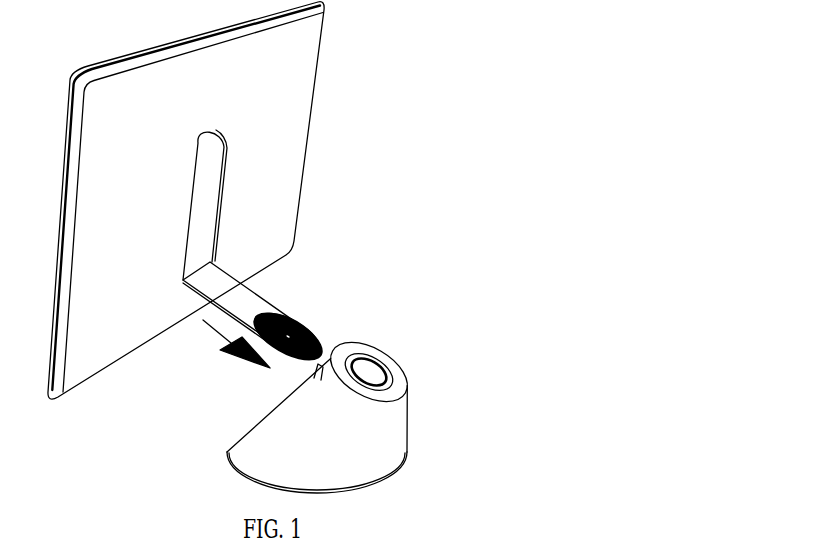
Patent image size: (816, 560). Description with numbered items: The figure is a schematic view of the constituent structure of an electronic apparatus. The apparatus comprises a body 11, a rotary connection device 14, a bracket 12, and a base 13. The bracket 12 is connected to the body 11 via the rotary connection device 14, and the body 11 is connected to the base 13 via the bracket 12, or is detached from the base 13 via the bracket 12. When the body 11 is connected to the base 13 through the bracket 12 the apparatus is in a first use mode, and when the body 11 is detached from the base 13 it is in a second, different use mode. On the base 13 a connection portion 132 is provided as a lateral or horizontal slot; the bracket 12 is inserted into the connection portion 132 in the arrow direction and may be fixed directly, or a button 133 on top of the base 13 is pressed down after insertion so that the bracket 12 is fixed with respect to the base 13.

The body 11 is at (270, 88).
The bracket 12 is at (240, 292).
The rotary connection device 14 is at (210, 262).
The base 13 is at (347, 427).
The button 133 is at (367, 367).
The connection portion 132 is at (313, 371).